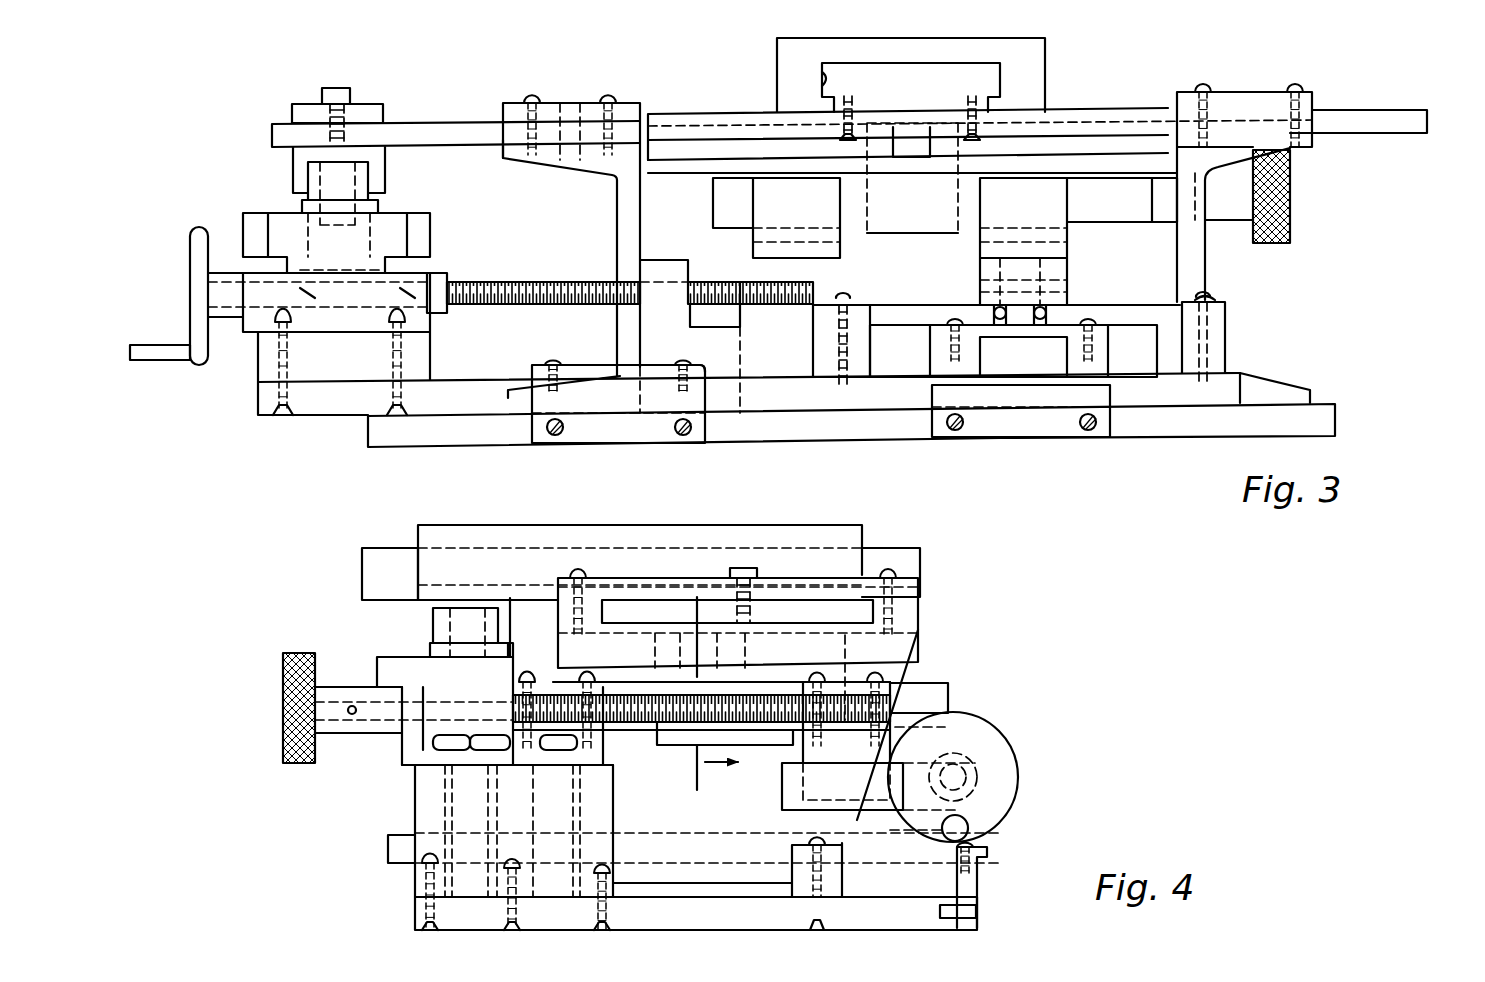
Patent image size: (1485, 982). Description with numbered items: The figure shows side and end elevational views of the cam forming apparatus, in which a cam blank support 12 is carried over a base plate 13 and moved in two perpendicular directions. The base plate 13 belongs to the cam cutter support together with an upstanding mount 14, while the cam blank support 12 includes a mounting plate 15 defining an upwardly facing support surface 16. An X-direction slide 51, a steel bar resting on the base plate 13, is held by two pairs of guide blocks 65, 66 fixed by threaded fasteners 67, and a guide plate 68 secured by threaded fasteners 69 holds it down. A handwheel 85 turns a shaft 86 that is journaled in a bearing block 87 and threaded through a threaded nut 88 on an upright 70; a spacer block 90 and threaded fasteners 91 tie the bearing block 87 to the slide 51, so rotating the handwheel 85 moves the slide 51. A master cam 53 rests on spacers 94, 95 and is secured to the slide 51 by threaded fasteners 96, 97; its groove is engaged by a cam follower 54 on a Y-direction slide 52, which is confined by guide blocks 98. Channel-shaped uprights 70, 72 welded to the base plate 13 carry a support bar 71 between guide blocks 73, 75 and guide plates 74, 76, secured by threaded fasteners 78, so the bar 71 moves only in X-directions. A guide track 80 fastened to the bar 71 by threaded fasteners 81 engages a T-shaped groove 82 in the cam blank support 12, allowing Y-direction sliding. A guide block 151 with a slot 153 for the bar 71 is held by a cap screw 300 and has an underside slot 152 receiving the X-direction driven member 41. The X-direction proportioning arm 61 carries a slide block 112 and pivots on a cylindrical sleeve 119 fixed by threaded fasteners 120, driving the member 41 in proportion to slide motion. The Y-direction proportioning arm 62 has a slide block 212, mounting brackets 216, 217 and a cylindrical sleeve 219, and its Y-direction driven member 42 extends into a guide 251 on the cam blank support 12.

In FIG. 3, the cam blank support 12 is at (1047, 48).
In FIG. 4, the cam blank support 12 is at (539, 545).
In FIG. 3, the base plate 13 is at (442, 446).
In FIG. 4, the base plate 13 is at (467, 897).
In FIG. 4, the upstanding mount 14 is at (722, 612).
In FIG. 4, the mounting plate 15 is at (830, 645).
In FIG. 3, the support surface 16 is at (778, 42).
In FIG. 4, the support surface 16 is at (845, 525).
In FIG. 3, the X-direction driven member 41 is at (368, 180).
In FIG. 4, the X-direction driven member 41 is at (750, 658).
In FIG. 3, the Y-direction driven member 42 is at (966, 162).
In FIG. 4, the Y-direction driven member 42 is at (437, 633).
In FIG. 3, the X-direction slide 51 is at (437, 380).
In FIG. 4, the X-direction slide 51 is at (938, 882).
In FIG. 3, the Y-direction slide 52 is at (1022, 368).
In FIG. 4, the Y-direction slide 52 is at (400, 848).
In FIG. 3, the master cam 53 is at (1085, 305).
In FIG. 3, the cam follower 54 is at (1048, 305).
In FIG. 3, the X-direction proportioning arm 61 is at (437, 228).
In FIG. 4, the X-direction proportioning arm 61 is at (953, 685).
In FIG. 3, the Y-direction proportioning arm 62 is at (860, 232).
In FIG. 4, the Y-direction proportioning arm 62 is at (378, 655).
In FIG. 3, the guide blocks 65 is at (625, 440).
In FIG. 4, the guide blocks 65 is at (980, 890).
In FIG. 3, the guide blocks 66 is at (1035, 440).
In FIG. 3, the threaded fasteners 67 is at (562, 434).
In FIG. 4, the threaded fasteners 67 is at (980, 915).
In FIG. 3, the guide plate 68 is at (706, 372).
In FIG. 4, the guide plate 68 is at (792, 845).
In FIG. 3, the threaded fasteners 69 is at (560, 365).
In FIG. 4, the threaded fasteners 69 is at (817, 845).
In FIG. 3, the upright 70 is at (633, 225).
In FIG. 4, the upright 70 is at (674, 812).
In FIG. 3, the support bar 71 is at (448, 130).
In FIG. 4, the support bar 71 is at (738, 627).
In FIG. 3, the upright 72 is at (1205, 268).
In FIG. 3, the guide blocks 73 is at (503, 135).
In FIG. 4, the guide blocks 73 is at (560, 610).
In FIG. 3, the guide plate 74 is at (510, 103).
In FIG. 4, the guide plate 74 is at (548, 585).
In FIG. 3, the guide blocks 75 is at (1037, 134).
In FIG. 3, the guide plate 76 is at (980, 123).
In FIG. 3, the threaded fasteners 78 is at (1295, 88).
In FIG. 3, the guide track 80 is at (911, 87).
In FIG. 4, the guide track 80 is at (362, 556).
In FIG. 3, the threaded fasteners 81 is at (848, 95).
In FIG. 3, the T-shaped groove 82 is at (820, 78).
In FIG. 3, the handwheel 85 is at (190, 250).
In FIG. 4, the handwheel 85 is at (975, 810).
In FIG. 3, the shaft 86 is at (460, 283).
In FIG. 3, the bearing block 87 is at (256, 332).
In FIG. 3, the threaded nut 88 is at (655, 270).
In FIG. 3, the spacer block 90 is at (395, 345).
In FIG. 3, the threaded fasteners 91 is at (385, 400).
In FIG. 3, the spacer 94 is at (865, 357).
In FIG. 3, the spacer 95 is at (1182, 345).
In FIG. 3, the threaded fastener 96 is at (840, 298).
In FIG. 3, the threaded fastener 97 is at (1210, 300).
In FIG. 3, the guide blocks 98 is at (930, 362).
In FIG. 3, the slide block 112 is at (302, 208).
In FIG. 4, the slide block 112 is at (738, 742).
In FIG. 4, the cylindrical sleeve 119 is at (614, 770).
In FIG. 4, the threaded fasteners 120 is at (598, 912).
In FIG. 3, the guide block 151 is at (298, 156).
In FIG. 4, the guide block 151 is at (635, 592).
In FIG. 3, the slot 152 is at (308, 182).
In FIG. 3, the slot 153 is at (400, 112).
In FIG. 3, the slide block 212 is at (866, 172).
In FIG. 4, the slide block 212 is at (498, 653).
In FIG. 3, the mounting bracket 216 is at (1078, 218).
In FIG. 3, the mounting bracket 217 is at (772, 262).
In FIG. 3, the cylindrical sleeve 219 is at (748, 330).
In FIG. 4, the cylindrical sleeve 219 is at (420, 790).
In FIG. 4, the guide 251 is at (430, 617).
In FIG. 3, the cap screw 300 is at (335, 88).
In FIG. 4, the cap screw 300 is at (750, 568).